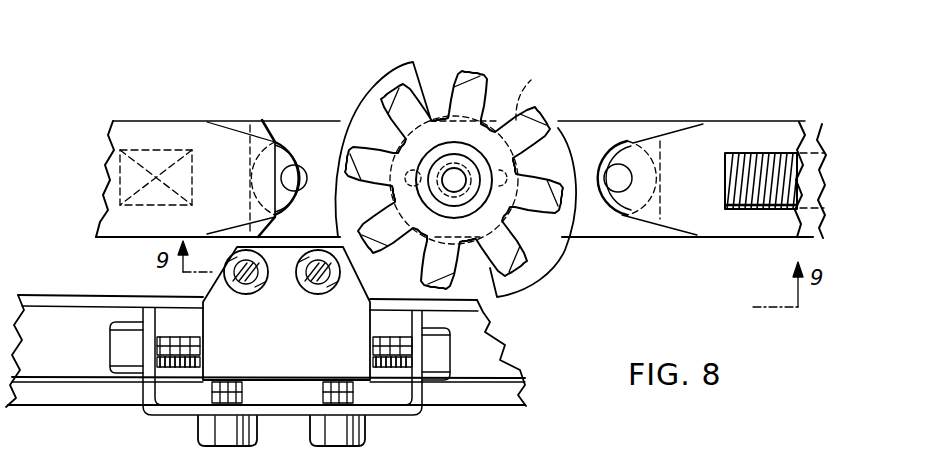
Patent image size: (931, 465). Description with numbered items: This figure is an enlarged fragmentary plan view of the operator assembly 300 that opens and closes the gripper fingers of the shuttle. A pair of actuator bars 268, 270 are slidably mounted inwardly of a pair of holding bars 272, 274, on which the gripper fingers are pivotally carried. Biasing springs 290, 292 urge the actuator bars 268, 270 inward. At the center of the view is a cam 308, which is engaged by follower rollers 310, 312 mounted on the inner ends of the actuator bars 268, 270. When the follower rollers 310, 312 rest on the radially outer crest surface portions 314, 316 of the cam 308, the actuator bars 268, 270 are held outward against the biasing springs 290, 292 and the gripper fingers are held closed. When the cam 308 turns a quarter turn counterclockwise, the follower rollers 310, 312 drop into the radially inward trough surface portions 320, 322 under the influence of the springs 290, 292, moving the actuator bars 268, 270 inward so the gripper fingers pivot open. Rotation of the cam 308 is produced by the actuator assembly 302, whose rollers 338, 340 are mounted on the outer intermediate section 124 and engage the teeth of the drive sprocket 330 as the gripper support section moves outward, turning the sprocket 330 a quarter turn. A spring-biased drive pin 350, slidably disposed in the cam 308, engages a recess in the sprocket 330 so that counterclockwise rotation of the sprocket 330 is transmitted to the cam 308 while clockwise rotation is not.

The outer intermediate section 124 is at (530, 362).
The actuator bar 268 is at (256, 122).
The actuator bar 270 is at (688, 215).
The holding bar 272 is at (200, 137).
The holding bar 274 is at (812, 140).
The biasing spring 290 is at (125, 179).
The biasing spring 292 is at (750, 153).
The operator assembly 300 is at (543, 65).
The actuator assembly 302 is at (186, 288).
The cam 308 is at (377, 66).
The follower roller 310 is at (307, 140).
The follower roller 312 is at (612, 145).
The crest surface portion 314 is at (358, 102).
The crest surface portion 316 is at (553, 258).
The trough surface portion 320 is at (547, 99).
The trough surface portion 322 is at (412, 248).
The drive sprocket 330 is at (485, 64).
The roller 338 is at (244, 296).
The roller 340 is at (317, 296).
The drive pin 350 is at (406, 183).